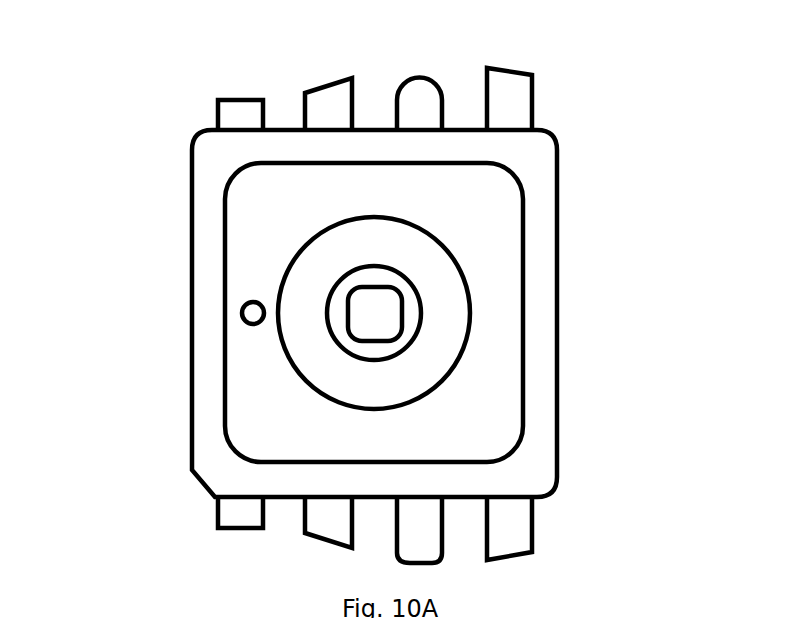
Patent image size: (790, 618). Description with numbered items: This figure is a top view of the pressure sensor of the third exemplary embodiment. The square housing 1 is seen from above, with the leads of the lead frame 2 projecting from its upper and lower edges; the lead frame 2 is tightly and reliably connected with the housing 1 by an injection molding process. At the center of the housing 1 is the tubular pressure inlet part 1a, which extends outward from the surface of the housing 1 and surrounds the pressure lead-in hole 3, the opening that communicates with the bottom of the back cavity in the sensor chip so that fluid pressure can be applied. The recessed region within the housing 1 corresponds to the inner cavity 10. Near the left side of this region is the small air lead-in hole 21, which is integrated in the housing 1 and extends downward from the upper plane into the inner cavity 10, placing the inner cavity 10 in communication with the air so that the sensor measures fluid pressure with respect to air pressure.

The housing 1 is at (545, 237).
The pressure inlet part 1a is at (437, 322).
The lead frame 2 is at (503, 92).
The pressure lead-in hole 3 is at (383, 340).
The inner cavity 10 is at (260, 222).
The air lead-in hole 21 is at (241, 313).